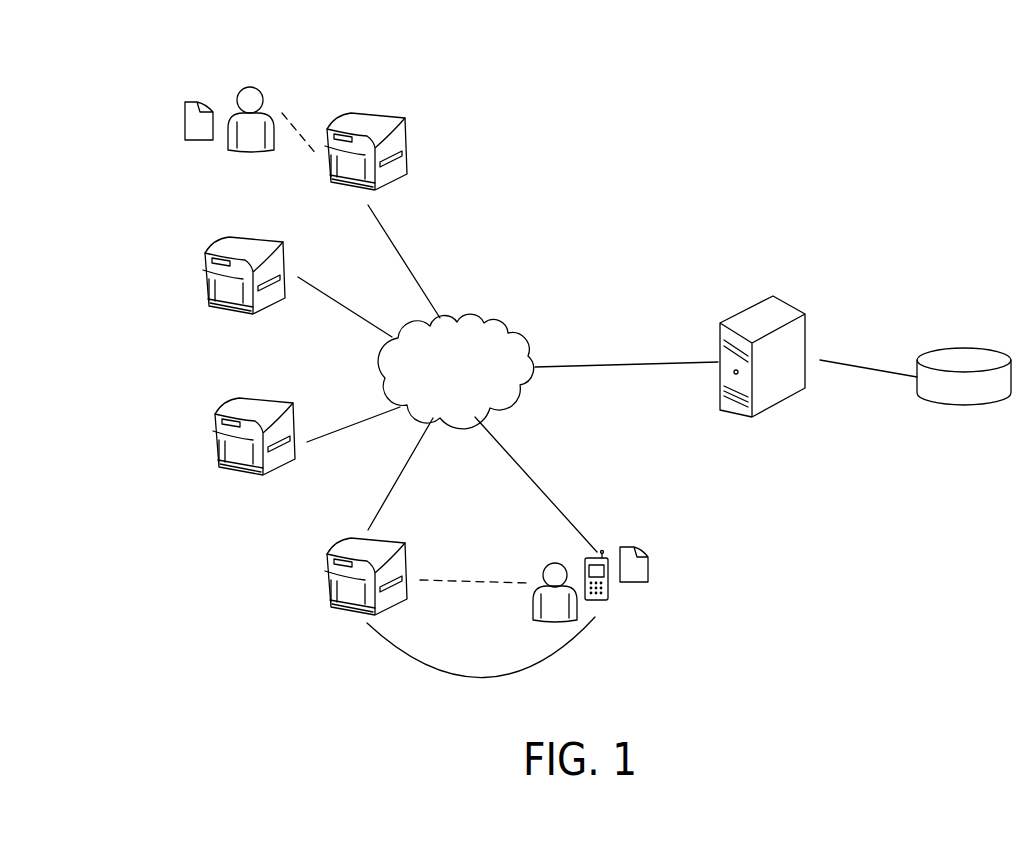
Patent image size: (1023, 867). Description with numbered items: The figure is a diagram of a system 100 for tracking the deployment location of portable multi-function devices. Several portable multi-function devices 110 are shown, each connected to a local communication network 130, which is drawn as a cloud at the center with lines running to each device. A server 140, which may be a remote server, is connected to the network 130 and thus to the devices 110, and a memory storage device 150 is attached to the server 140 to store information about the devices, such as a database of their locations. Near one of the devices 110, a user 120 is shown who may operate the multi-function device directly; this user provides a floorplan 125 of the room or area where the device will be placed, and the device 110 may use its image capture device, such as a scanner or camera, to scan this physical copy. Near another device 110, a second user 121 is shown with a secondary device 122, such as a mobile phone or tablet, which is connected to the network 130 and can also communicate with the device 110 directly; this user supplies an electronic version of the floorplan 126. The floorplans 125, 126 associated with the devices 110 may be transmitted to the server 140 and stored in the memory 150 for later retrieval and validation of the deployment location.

The system 100 is at (810, 138).
The portable multi-function device 110 is at (355, 116).
The user 120 is at (238, 92).
The user 121 is at (545, 573).
The secondary device 122 is at (607, 605).
The user-supplied floorplan 125 is at (200, 127).
The user-supplied floorplan 126 is at (640, 555).
The local communication network 130 is at (505, 312).
The server 140 is at (755, 302).
The memory storage device 150 is at (958, 405).